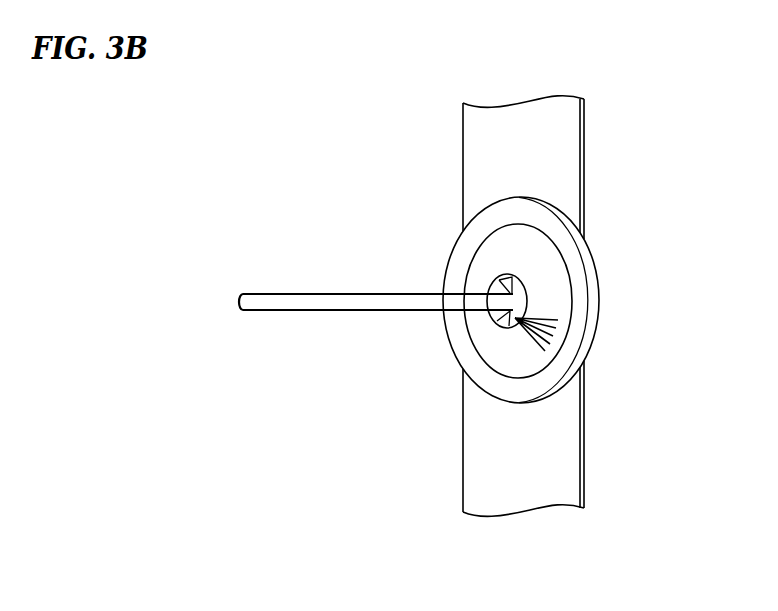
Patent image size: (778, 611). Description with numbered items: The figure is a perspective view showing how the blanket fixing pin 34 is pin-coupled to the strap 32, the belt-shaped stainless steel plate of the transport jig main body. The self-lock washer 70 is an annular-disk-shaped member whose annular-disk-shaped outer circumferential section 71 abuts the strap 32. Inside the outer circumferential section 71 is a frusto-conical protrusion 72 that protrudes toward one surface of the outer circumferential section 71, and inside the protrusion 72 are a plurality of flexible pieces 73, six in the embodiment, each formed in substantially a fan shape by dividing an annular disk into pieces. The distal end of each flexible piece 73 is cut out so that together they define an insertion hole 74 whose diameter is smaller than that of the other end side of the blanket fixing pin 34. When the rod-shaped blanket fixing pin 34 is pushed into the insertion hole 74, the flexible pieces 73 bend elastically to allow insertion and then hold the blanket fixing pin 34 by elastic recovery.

The strap 32 is at (472, 481).
The blanket fixing pin 34 is at (282, 298).
The self-lock washer 70 is at (516, 279).
The outer circumferential section 71 is at (579, 334).
The frusto-conical protrusion 72 is at (552, 290).
The flexible pieces 73 is at (500, 275).
The insertion hole 74 is at (492, 311).